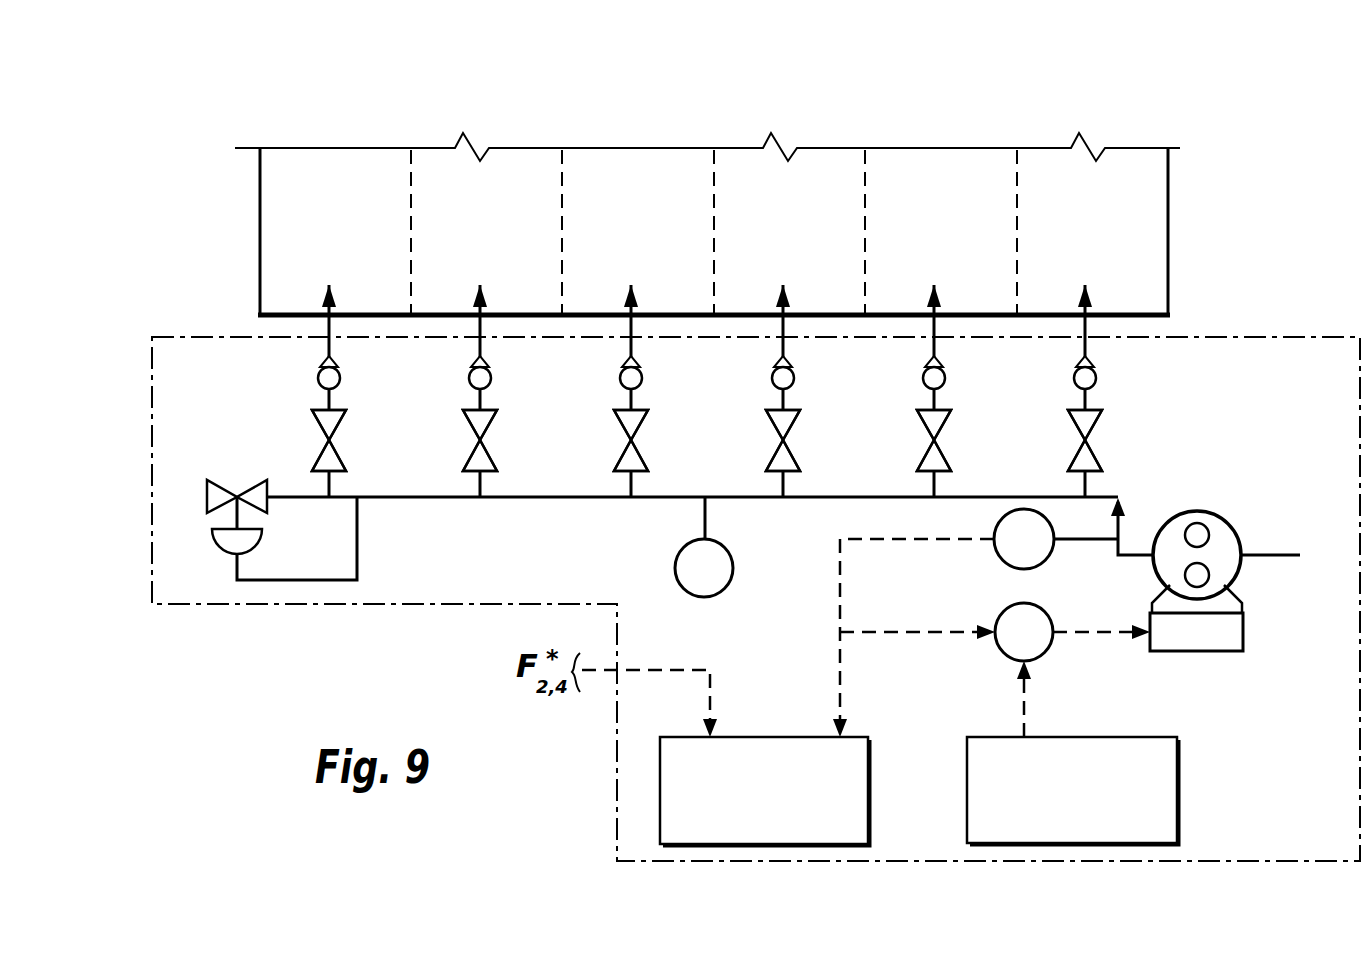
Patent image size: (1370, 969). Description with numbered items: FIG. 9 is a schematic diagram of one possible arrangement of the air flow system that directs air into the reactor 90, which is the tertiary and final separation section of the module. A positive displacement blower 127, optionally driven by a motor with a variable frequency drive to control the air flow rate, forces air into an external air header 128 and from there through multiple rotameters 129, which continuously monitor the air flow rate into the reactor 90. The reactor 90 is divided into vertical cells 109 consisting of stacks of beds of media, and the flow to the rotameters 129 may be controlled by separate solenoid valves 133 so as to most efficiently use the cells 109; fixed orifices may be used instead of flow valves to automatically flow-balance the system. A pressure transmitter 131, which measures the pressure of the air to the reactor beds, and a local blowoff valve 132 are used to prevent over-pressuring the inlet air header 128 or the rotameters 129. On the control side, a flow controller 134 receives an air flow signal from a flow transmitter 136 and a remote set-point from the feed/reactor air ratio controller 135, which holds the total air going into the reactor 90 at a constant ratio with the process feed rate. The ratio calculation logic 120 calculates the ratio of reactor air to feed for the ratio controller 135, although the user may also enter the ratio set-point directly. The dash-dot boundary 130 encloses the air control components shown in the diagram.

The reactor 90 is at (1170, 228).
The vertical cells 109 is at (327, 190).
The positive displacement blower 127 is at (1221, 522).
The air header 128 is at (549, 500).
The rotameters 129 is at (319, 373).
The air control system 130 is at (272, 604).
The pressure transmitter 131 is at (733, 553).
The local blowoff valve 132 is at (214, 479).
The solenoid valves 133 is at (316, 412).
The flow controller 134 is at (1049, 651).
The feed/reactor air ratio controller 135 is at (1165, 735).
The flow transmitter 136 is at (997, 551).
The ratio calculation logic 120 is at (867, 737).